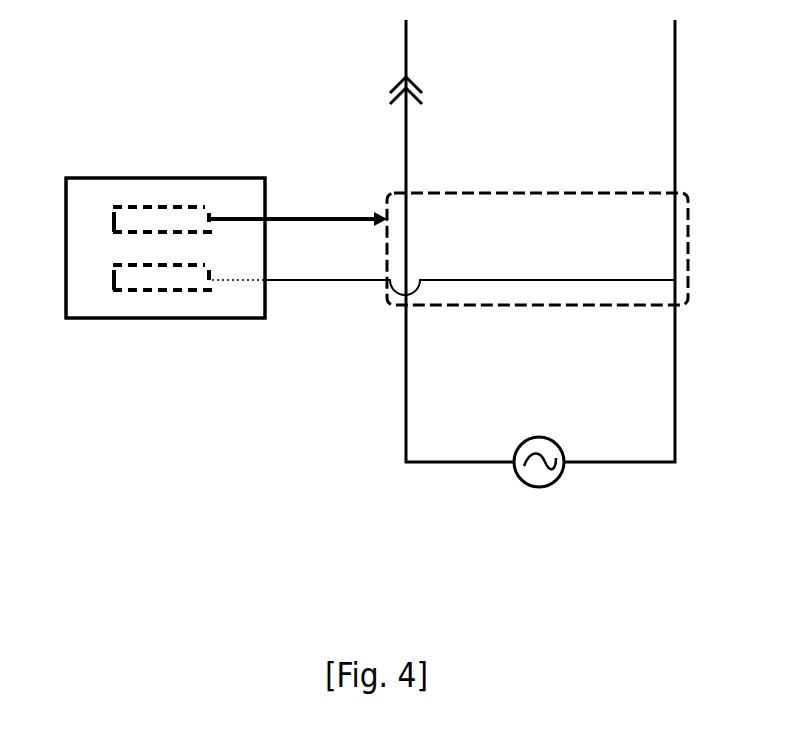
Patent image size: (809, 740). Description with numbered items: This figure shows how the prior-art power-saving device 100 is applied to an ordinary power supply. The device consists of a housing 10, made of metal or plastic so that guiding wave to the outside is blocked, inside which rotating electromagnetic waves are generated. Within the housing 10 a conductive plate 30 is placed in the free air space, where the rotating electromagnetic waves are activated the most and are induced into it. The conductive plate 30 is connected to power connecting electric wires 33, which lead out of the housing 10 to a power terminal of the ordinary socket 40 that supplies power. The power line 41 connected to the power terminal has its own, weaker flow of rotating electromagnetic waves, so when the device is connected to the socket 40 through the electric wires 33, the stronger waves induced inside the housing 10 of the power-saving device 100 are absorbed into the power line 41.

The power-saving device 100 is at (165, 187).
The housing 10 is at (213, 190).
The conductive plate 30 is at (158, 292).
The electric wires 33 is at (320, 282).
The socket 40 is at (690, 248).
The power line 41 is at (405, 422).